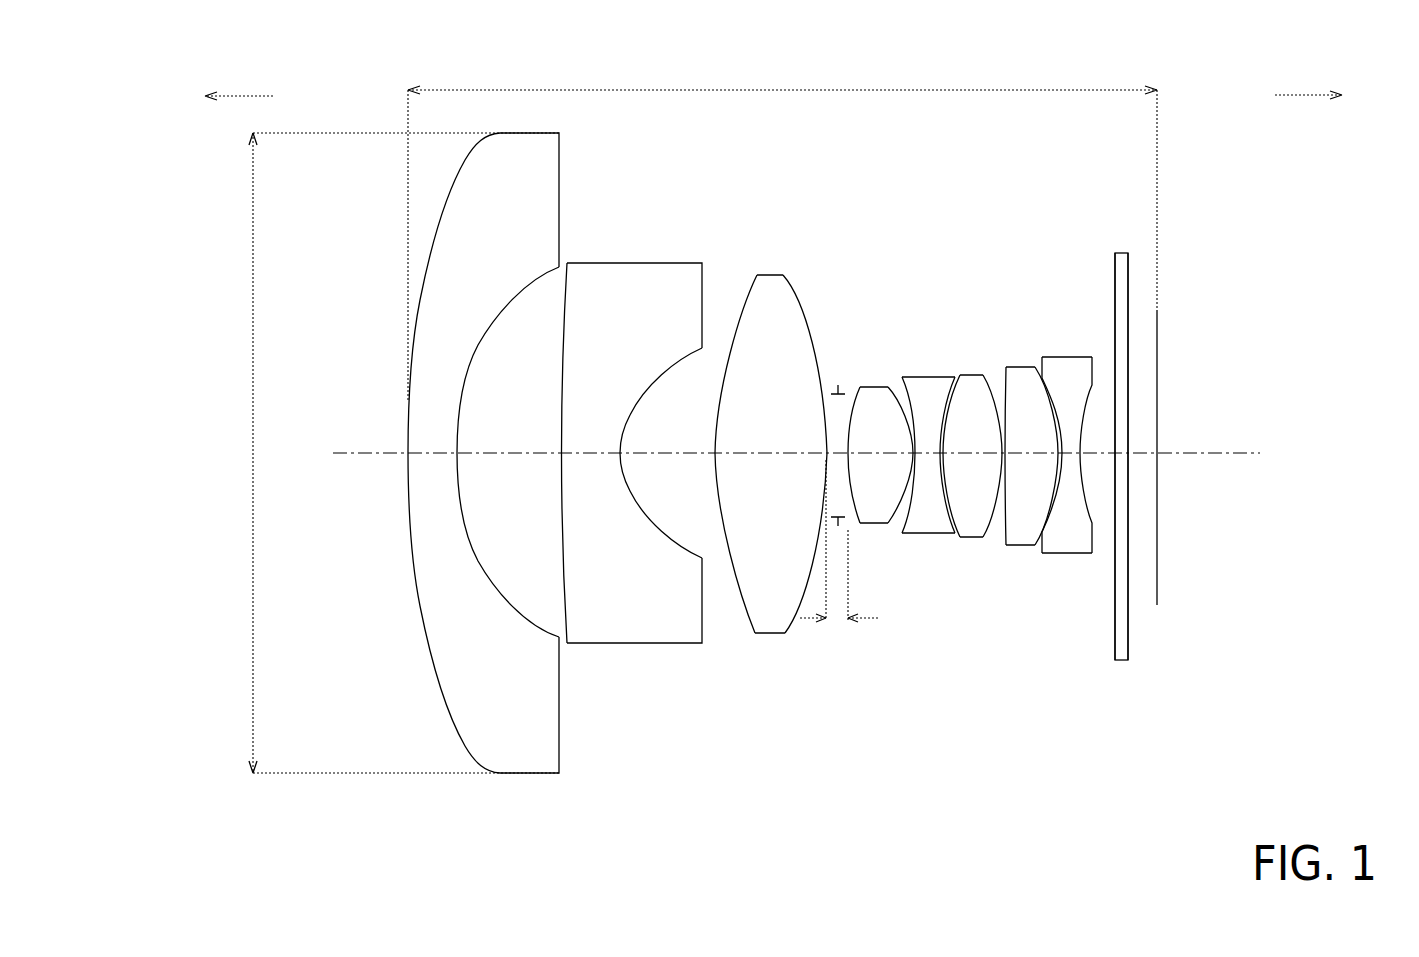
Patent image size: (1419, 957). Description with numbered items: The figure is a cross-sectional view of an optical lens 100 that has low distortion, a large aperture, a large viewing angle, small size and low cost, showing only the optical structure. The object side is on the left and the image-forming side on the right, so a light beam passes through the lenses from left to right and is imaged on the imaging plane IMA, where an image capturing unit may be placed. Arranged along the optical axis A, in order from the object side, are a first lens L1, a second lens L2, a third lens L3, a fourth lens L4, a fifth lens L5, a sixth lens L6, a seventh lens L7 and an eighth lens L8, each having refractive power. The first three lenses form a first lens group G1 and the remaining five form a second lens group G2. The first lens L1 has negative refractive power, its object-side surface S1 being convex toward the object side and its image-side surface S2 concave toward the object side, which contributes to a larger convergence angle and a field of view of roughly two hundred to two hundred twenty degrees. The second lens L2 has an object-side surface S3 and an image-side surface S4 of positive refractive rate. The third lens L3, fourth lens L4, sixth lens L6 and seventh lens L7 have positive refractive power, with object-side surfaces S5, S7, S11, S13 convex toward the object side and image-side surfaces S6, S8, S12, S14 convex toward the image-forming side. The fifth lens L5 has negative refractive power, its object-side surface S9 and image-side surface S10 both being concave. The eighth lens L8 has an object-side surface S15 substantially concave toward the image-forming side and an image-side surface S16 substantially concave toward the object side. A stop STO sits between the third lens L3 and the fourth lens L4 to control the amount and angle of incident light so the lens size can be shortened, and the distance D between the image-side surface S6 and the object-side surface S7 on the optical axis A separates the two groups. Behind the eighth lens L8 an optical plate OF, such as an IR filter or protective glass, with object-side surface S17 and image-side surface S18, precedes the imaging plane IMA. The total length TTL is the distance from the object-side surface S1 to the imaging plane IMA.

The optical lens 100 is at (137, 66).
The optical axis A is at (1250, 453).
The total length TTL is at (782, 231).
The distance D is at (840, 554).
The first lens group G1 is at (617, 476).
The second lens group G2 is at (1037, 564).
The first lens L1 is at (483, 458).
The second lens L2 is at (632, 516).
The third lens L3 is at (771, 516).
The fourth lens L4 is at (880, 546).
The fifth lens L5 is at (933, 551).
The sixth lens L6 is at (978, 551).
The seventh lens L7 is at (1031, 546).
The eighth lens L8 is at (1134, 551).
The object-side surface of the first lens S1 is at (461, 157).
The image-side surface of the first lens S2 is at (537, 283).
The object-side surface of the second lens S3 is at (573, 310).
The image-side surface of the second lens S4 is at (662, 370).
The object-side surface of the third lens S5 is at (740, 305).
The image-side surface of the third lens S6 is at (808, 300).
The stop STO is at (838, 387).
The object-side surface of the fourth lens S7 is at (853, 387).
The image-side surface of the fourth lens S8 is at (900, 390).
The object-side surface of the fifth lens S9 is at (920, 385).
The image-side surface of the fifth lens S10 is at (942, 388).
The object-side surface of the sixth lens S11 is at (963, 385).
The image-side surface of the sixth lens S12 is at (990, 385).
The object-side surface of the seventh lens S13 is at (1012, 385).
The image-side surface of the seventh lens S14 is at (1038, 385).
The object-side surface of the eighth lens S15 is at (1068, 385).
The image-side surface of the eighth lens S16 is at (1085, 405).
The object-side surface of the optical plate S17 is at (1115, 268).
The image-side surface of the optical plate S18 is at (1128, 268).
The optical plate OF is at (1146, 422).
The imaging plane IMA is at (1157, 503).